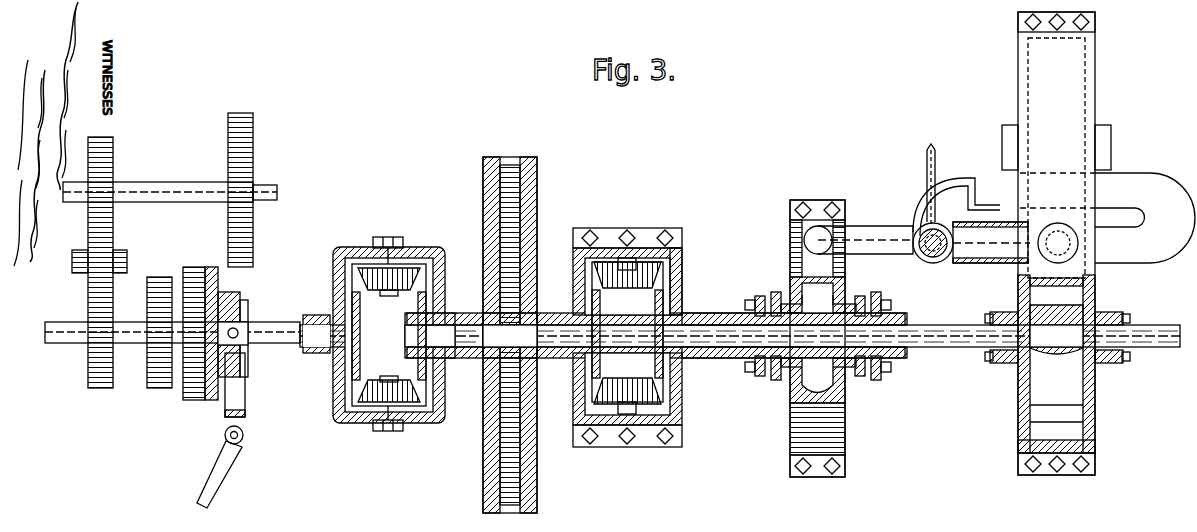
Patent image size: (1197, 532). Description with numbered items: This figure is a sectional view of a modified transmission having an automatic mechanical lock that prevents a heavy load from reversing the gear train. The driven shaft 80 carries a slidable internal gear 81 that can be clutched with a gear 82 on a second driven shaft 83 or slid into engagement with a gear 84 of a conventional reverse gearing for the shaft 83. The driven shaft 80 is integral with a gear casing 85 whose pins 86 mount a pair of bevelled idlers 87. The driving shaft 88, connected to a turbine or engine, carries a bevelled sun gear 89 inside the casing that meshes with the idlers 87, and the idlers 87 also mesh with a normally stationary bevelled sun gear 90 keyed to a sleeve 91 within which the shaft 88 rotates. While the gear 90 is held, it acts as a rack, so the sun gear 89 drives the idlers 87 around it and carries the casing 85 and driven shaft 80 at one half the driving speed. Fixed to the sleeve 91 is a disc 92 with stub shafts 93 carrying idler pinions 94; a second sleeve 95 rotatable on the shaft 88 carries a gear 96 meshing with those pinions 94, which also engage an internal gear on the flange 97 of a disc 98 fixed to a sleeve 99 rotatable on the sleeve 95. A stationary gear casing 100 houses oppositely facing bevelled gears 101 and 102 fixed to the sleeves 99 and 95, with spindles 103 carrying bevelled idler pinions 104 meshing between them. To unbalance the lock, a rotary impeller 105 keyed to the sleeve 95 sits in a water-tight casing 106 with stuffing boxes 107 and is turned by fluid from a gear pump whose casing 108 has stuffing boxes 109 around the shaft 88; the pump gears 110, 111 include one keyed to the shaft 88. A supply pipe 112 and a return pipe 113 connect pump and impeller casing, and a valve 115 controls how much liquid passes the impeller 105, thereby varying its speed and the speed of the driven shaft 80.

The driven shaft 80 is at (272, 320).
The slidable internal gear 81 is at (200, 270).
The gear 82 is at (162, 278).
The driven shaft 83 is at (138, 343).
The gear 84 is at (171, 190).
The gear casing 85 is at (428, 250).
The pins 86 is at (387, 235).
The bevelled idlers 87 is at (360, 260).
The driving shaft 88 is at (957, 322).
The bevelled sun gear 89 is at (350, 295).
The stationary sun gear 90 is at (425, 300).
The sleeve 91 is at (468, 358).
The disc 92 is at (482, 192).
The stub shafts 93 is at (500, 231).
The idler pinions 94 is at (537, 204).
The second sleeve 95 is at (715, 308).
The gear 96 is at (532, 280).
The flange 97 is at (510, 160).
The disc 98 is at (537, 240).
The sleeve 99 is at (545, 312).
The stationary gear casing 100 is at (627, 325).
The bevelled gear 101 is at (595, 382).
The bevelled gear 102 is at (676, 290).
The spindles 103 is at (627, 230).
The idler pinions 104 is at (620, 260).
The rotary impeller 105 is at (808, 394).
The water-tight casing 106 is at (820, 205).
The stuffing boxes 107 is at (755, 372).
The casing 108 is at (1020, 92).
The stuffing boxes 109 is at (1105, 312).
The gear 110 is at (1070, 100).
The gear 111 is at (1090, 396).
The supply pipe 112 is at (1130, 175).
The return pipe 113 is at (872, 228).
The valve 115 is at (942, 225).